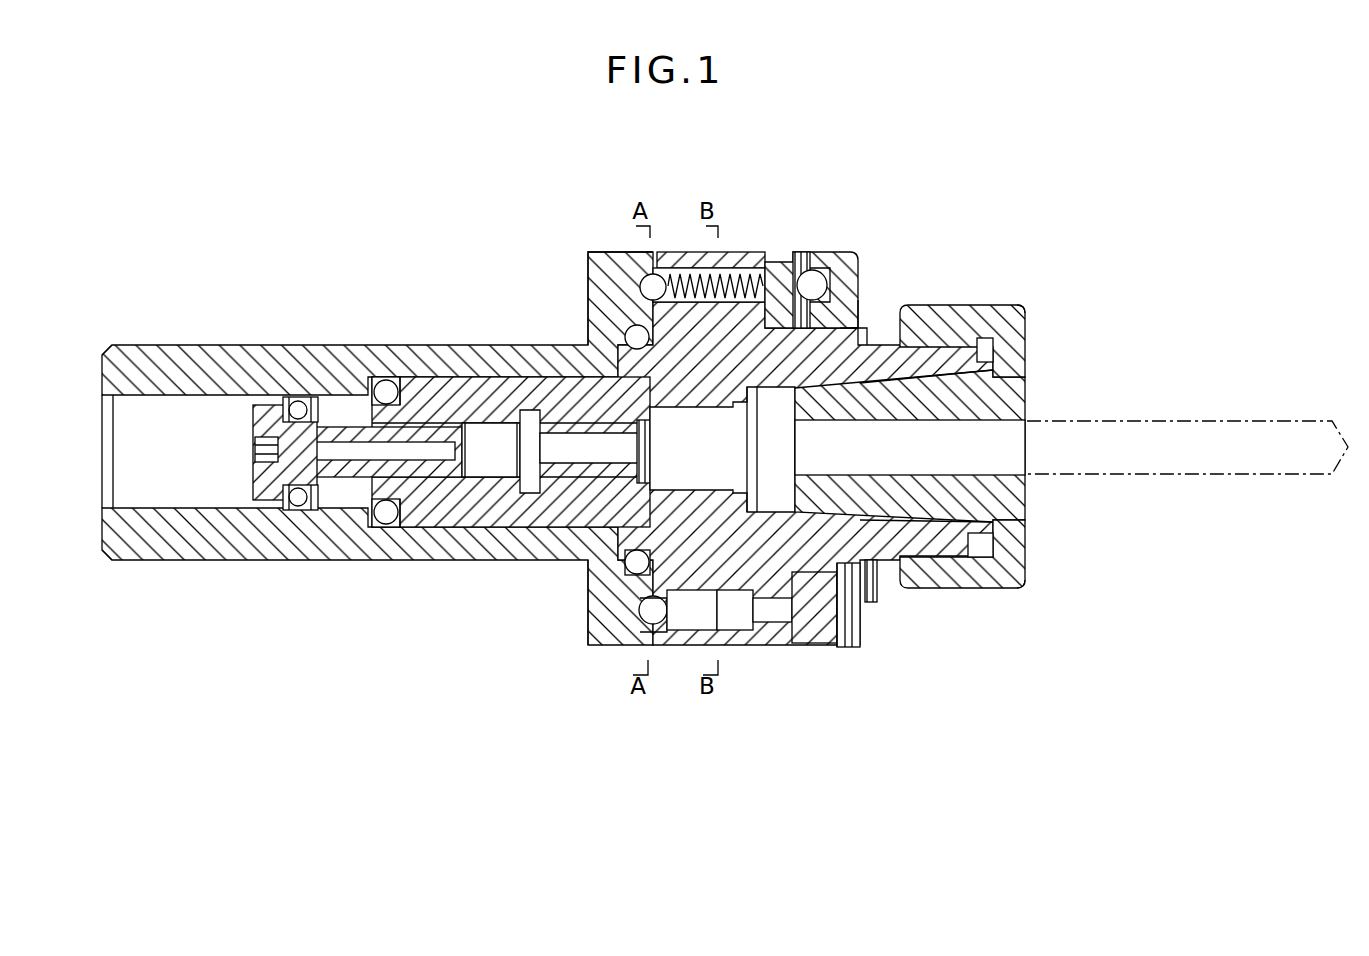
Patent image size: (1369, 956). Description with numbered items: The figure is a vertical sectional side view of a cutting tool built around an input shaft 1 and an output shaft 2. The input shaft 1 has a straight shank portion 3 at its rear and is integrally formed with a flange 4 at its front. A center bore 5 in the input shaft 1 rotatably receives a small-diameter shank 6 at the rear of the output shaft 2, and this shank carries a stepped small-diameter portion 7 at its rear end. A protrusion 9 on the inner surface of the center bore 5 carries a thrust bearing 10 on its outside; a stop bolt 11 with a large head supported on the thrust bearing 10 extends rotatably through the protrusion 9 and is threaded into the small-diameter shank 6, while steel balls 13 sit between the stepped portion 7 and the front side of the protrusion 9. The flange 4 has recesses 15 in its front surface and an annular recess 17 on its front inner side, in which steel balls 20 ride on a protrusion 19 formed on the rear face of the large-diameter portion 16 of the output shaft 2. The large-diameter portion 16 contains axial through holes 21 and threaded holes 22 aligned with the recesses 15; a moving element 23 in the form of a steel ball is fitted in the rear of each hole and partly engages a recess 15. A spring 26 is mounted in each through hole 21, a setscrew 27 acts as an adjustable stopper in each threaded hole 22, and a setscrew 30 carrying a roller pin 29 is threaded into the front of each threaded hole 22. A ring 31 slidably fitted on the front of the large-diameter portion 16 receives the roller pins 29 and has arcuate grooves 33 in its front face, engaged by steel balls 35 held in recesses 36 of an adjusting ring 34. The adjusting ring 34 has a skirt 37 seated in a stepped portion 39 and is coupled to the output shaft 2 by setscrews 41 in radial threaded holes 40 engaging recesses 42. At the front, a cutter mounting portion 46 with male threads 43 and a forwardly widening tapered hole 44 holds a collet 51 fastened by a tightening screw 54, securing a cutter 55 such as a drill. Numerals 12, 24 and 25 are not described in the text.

The input shaft 1 is at (187, 357).
The output shaft 2 is at (925, 570).
The straight shank portion 3 is at (123, 345).
The flange 4 is at (590, 252).
The center bore 5 is at (445, 378).
The small-diameter shank 6 is at (442, 515).
The stepped small-diameter portion 7 is at (390, 522).
The protrusion 9 is at (337, 407).
The thrust bearing 10 is at (300, 407).
The stop bolt 11 is at (276, 486).
The seal ring 12 is at (383, 385).
The steel balls 13 is at (373, 527).
The recesses 15 is at (590, 262).
The large-diameter portion 16 is at (722, 262).
The annular recess 17 is at (637, 577).
The protrusion 19 is at (587, 560).
The steel balls 20 is at (640, 617).
The axial through holes 21 is at (723, 270).
The threaded holes 22 is at (767, 632).
The moving element 23 is at (632, 330).
The spring chamber 24 is at (653, 255).
The ball 25 is at (658, 270).
The spring 26 is at (748, 290).
The setscrew 27 is at (693, 622).
The roller pin 29 is at (795, 630).
The setscrew 30 is at (733, 622).
The ring 31 is at (850, 318).
The arcuate grooves 33 is at (827, 290).
The adjusting ring 34 is at (980, 338).
The steel balls 35 is at (860, 297).
The recesses 36 is at (843, 283).
The skirt 37 is at (820, 260).
The stepped portion 39 is at (795, 262).
The radial threaded holes 40 is at (848, 628).
The setscrews 41 is at (830, 627).
The engaging recesses 42 is at (855, 583).
The male threads 43 is at (980, 558).
The tapered hole 44 is at (1000, 512).
The cutter mounting portion 46 is at (1012, 556).
The collet 51 is at (1035, 495).
The tightening screw 54 is at (1015, 310).
The cutter 55 is at (1125, 421).